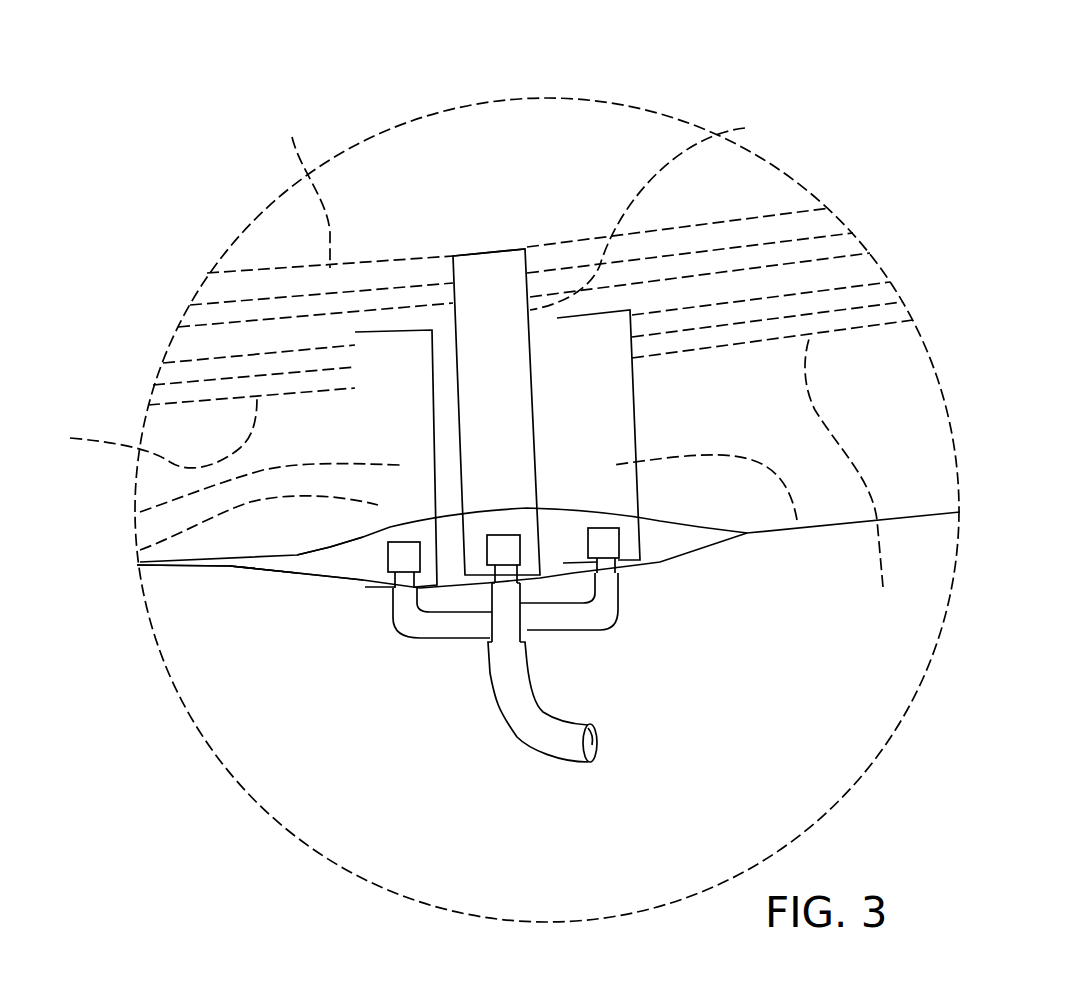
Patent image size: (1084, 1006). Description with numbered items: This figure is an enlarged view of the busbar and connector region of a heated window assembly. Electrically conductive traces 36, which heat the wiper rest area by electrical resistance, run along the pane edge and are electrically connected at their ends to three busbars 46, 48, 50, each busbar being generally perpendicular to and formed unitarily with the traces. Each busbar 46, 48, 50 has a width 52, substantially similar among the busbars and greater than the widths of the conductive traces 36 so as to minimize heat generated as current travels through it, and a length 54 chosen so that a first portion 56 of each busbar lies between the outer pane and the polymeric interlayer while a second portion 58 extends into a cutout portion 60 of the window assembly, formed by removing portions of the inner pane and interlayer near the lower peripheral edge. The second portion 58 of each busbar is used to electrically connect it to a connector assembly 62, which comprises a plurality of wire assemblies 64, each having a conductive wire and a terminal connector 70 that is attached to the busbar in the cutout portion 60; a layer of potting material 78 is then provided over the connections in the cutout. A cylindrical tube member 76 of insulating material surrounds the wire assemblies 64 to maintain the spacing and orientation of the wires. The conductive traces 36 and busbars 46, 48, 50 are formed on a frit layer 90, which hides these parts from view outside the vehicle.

The conductive traces 36 is at (469, 363).
The busbar 46 is at (140, 550).
The busbar 48 is at (512, 283).
The busbar 50 is at (797, 520).
The width 52 is at (490, 253).
The length 54 is at (745, 128).
The first portion 56 is at (140, 512).
The second portion 58 is at (385, 547).
The cutout portion 60 is at (227, 567).
The connector assembly 62 is at (518, 715).
The wire assemblies 64 is at (460, 637).
The terminal connector 70 is at (620, 543).
The cylindrical tube member 76 is at (580, 762).
The layer of potting material 78 is at (283, 563).
The frit layer 90 is at (337, 560).